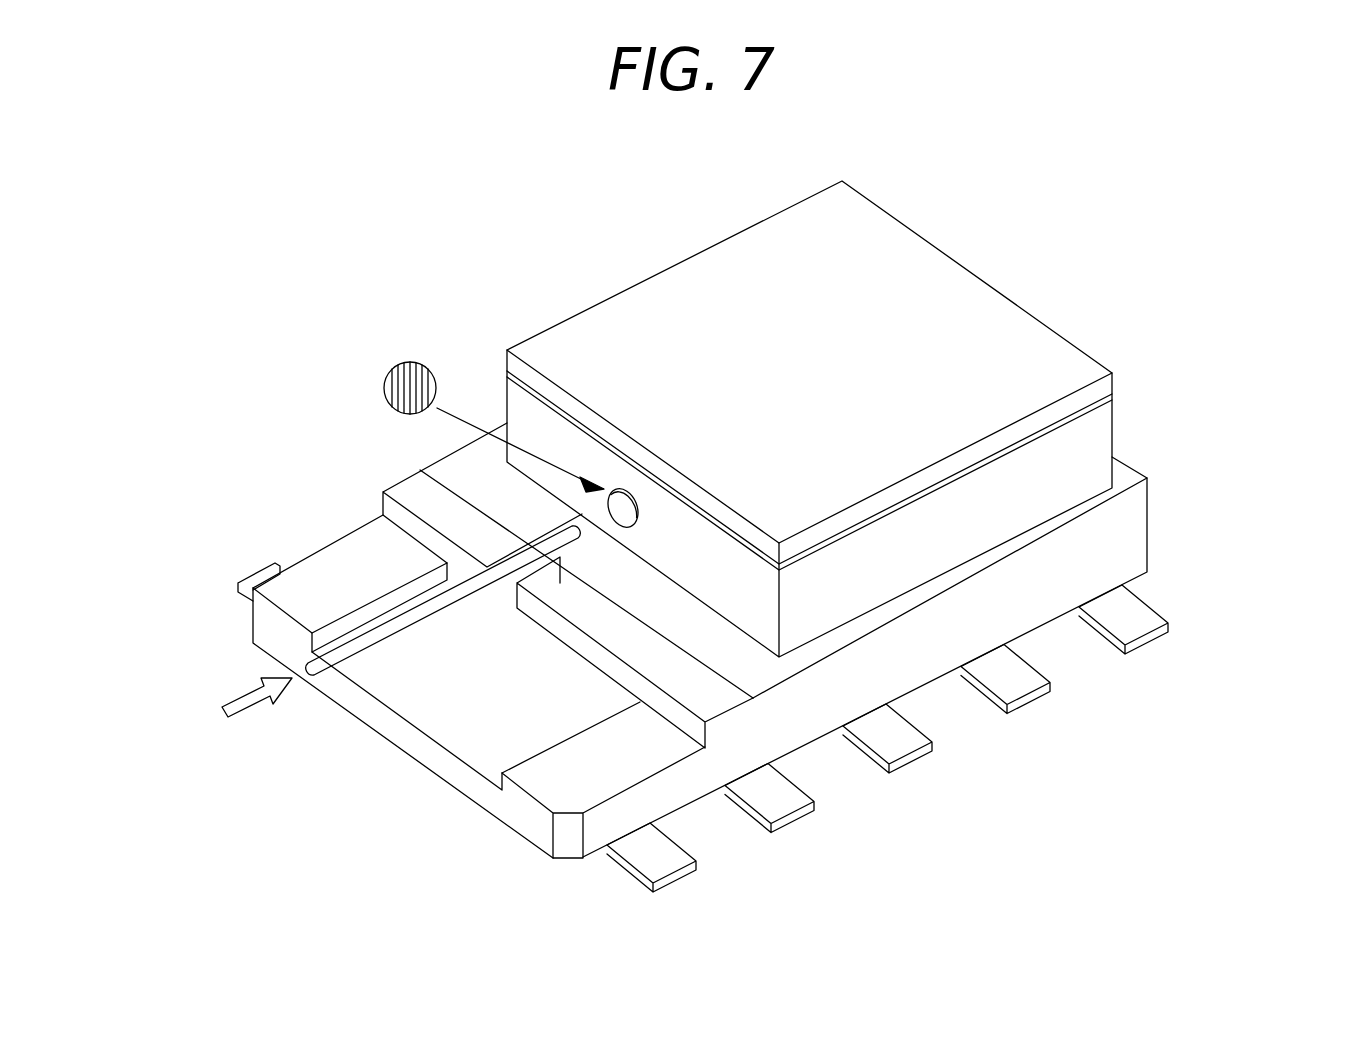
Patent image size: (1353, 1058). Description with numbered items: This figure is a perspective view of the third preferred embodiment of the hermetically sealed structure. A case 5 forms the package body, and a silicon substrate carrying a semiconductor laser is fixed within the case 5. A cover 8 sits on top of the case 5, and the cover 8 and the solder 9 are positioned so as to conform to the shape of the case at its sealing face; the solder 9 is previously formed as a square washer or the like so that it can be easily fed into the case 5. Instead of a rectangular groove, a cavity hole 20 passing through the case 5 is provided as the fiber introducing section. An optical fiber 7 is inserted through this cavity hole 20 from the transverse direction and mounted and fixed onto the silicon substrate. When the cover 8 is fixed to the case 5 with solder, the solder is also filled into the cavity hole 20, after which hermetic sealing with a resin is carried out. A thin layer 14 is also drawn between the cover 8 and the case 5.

The case 5 is at (1133, 543).
The optical fiber 7 is at (373, 633).
The cover 8 is at (928, 288).
The solder 9 is at (386, 366).
The layer 14 is at (1112, 392).
The cavity hole 20 is at (605, 487).